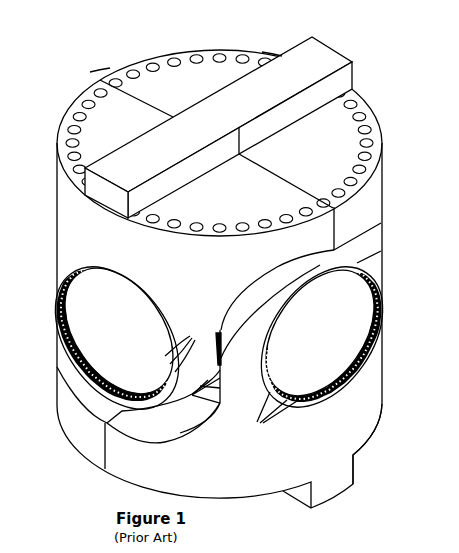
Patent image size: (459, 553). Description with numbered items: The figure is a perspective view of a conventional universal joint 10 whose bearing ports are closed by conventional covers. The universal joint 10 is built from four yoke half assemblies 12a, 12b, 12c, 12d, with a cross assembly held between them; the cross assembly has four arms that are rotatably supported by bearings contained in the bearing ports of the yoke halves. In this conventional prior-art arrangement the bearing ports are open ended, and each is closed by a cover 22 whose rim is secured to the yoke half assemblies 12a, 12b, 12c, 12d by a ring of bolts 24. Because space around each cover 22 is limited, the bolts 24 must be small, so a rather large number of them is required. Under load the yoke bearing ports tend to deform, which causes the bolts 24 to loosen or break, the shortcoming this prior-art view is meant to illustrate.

The universal joint 10 is at (221, 262).
The yoke half assembly 12a is at (98, 86).
The yoke half assembly 12b is at (264, 50).
The yoke half assembly 12c is at (105, 442).
The yoke half assembly 12d is at (366, 431).
The cover 22 is at (90, 326).
The bolt 24 is at (192, 361).